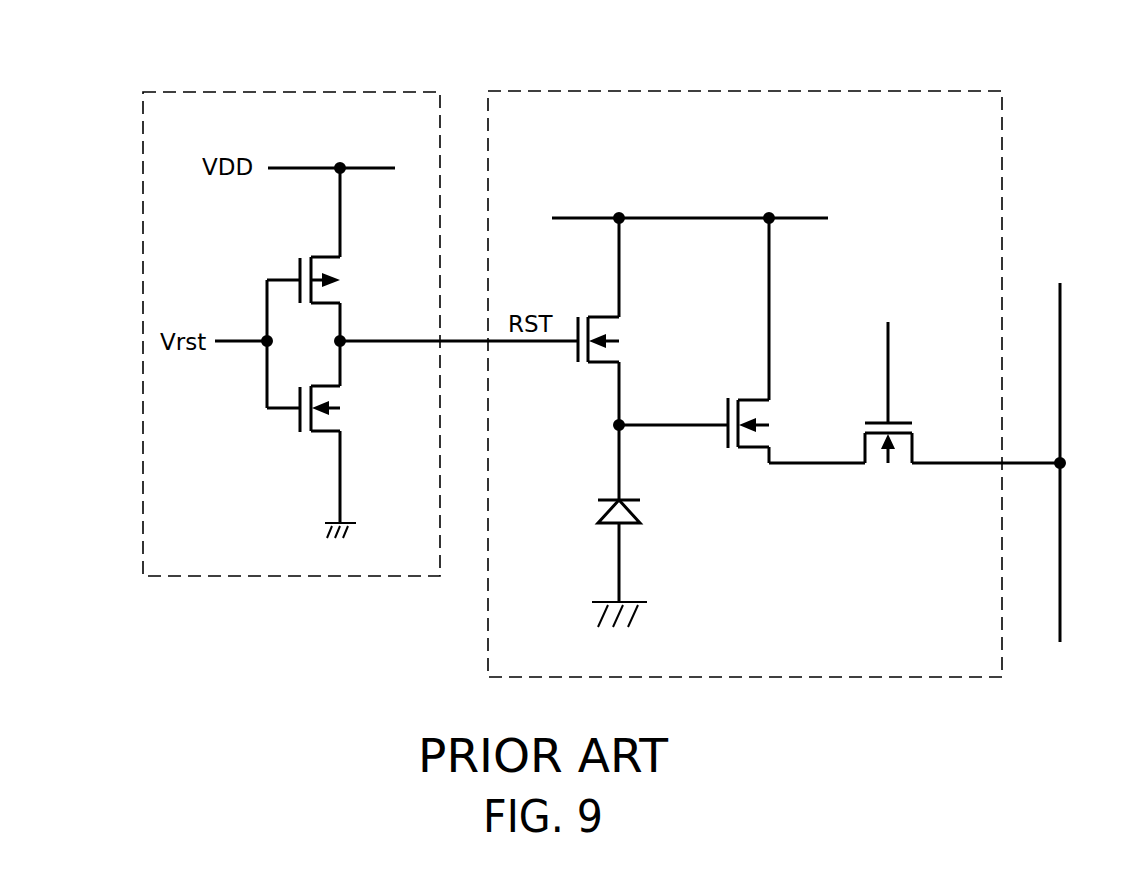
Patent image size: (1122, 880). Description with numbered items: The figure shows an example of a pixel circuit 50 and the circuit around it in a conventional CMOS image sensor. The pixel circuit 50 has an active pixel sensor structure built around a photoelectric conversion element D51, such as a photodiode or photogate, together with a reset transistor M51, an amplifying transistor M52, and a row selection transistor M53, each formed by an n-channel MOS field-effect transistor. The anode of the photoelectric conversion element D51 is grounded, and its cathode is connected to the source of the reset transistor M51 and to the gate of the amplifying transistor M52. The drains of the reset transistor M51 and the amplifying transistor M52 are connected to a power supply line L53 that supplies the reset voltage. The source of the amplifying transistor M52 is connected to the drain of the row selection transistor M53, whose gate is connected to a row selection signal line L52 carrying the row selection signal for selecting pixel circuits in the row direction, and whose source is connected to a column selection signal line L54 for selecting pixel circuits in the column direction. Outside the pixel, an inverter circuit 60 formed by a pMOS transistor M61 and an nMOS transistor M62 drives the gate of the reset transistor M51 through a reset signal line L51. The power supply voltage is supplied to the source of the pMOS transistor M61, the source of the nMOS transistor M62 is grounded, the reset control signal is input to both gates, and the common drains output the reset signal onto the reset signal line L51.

The inverter circuit 60 is at (350, 92).
The pixel circuit 50 is at (905, 91).
The pMOS transistor M61 is at (293, 265).
The nMOS transistor M62 is at (322, 442).
The reset signal line L51 is at (417, 343).
The power supply line L53 is at (710, 215).
The reset transistor M51 is at (598, 368).
The photoelectric conversion element D51 is at (595, 512).
The amplifying transistor M52 is at (755, 450).
The row selection transistor M53 is at (878, 475).
The row selection signal line L52 is at (888, 383).
The column selection signal line L54 is at (1062, 307).